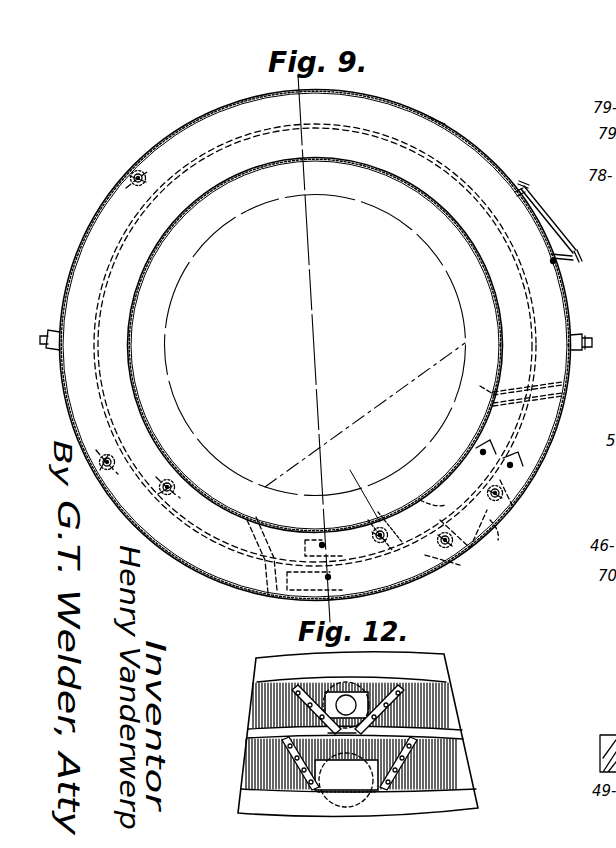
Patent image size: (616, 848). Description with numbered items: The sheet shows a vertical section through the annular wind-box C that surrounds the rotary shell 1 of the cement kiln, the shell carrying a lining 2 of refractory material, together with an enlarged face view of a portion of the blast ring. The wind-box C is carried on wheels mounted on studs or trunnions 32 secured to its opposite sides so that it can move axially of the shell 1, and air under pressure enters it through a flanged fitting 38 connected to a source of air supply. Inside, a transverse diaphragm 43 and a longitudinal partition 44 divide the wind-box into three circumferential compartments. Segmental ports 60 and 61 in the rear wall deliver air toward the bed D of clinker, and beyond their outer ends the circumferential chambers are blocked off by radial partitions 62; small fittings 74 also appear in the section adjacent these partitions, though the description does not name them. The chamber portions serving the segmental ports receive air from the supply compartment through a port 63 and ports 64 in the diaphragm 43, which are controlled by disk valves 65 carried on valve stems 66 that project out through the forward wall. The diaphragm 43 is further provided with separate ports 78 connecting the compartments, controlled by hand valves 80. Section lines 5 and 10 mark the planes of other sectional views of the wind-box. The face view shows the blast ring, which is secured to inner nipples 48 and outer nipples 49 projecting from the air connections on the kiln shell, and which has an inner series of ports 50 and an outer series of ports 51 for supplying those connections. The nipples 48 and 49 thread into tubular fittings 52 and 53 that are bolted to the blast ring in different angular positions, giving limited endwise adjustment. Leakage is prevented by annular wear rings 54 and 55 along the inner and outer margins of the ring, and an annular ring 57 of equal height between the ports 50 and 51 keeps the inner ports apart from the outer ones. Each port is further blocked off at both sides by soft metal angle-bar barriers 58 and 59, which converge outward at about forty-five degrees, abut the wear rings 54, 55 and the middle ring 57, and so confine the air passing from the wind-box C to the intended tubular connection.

In FIG. 9, the rotary shell 1 is at (479, 160).
In FIG. 9, the lining 2 is at (452, 284).
In FIG. 9, the section line 5— 5 is at (374, 468).
In FIG. 9, the section line 10— 10 is at (292, 83).
In FIG. 9, the studs or trunnions 32 is at (56, 332).
In FIG. 9, the flanged fitting 38 is at (537, 200).
In FIG. 9, the transverse diaphragm 43 is at (324, 345).
In FIG. 9, the longitudinal partition 44 is at (358, 137).
In FIG. 12, the inner nipples 48 is at (352, 700).
In FIG. 12, the outer nipples 49 is at (383, 795).
In FIG. 12, the inner ports 50 is at (375, 694).
In FIG. 12, the outer ports 51 is at (346, 775).
In FIG. 12, the tubular fitting 52 is at (325, 684).
In FIG. 12, the tubular fitting 53 is at (362, 816).
In FIG. 12, the inner wear ring 54 is at (436, 662).
In FIG. 12, the outer wear ring 55 is at (470, 800).
In FIG. 12, the annular ring 57 is at (452, 726).
In FIG. 12, the barrier 58 is at (400, 688).
In FIG. 12, the barrier 59 is at (408, 768).
In FIG. 9, the inner segmental port 60 is at (437, 492).
In FIG. 9, the outer segmental port 61 is at (502, 528).
In FIG. 9, the radial partitions 62 is at (500, 390).
In FIG. 9, the port 63 is at (379, 526).
In FIG. 9, the ports 64 is at (508, 495).
In FIG. 9, the disk valves 65 is at (502, 490).
In FIG. 9, the valve stems 66 is at (130, 176).
In FIG. 9, the bracket 74 is at (511, 460).
In FIG. 9, the ports 78 is at (150, 174).
In FIG. 9, the hand valves 80 is at (137, 189).
In FIG. 9, the annular wind-box C is at (437, 118).
In FIG. 9, the bed of clinker D is at (378, 402).